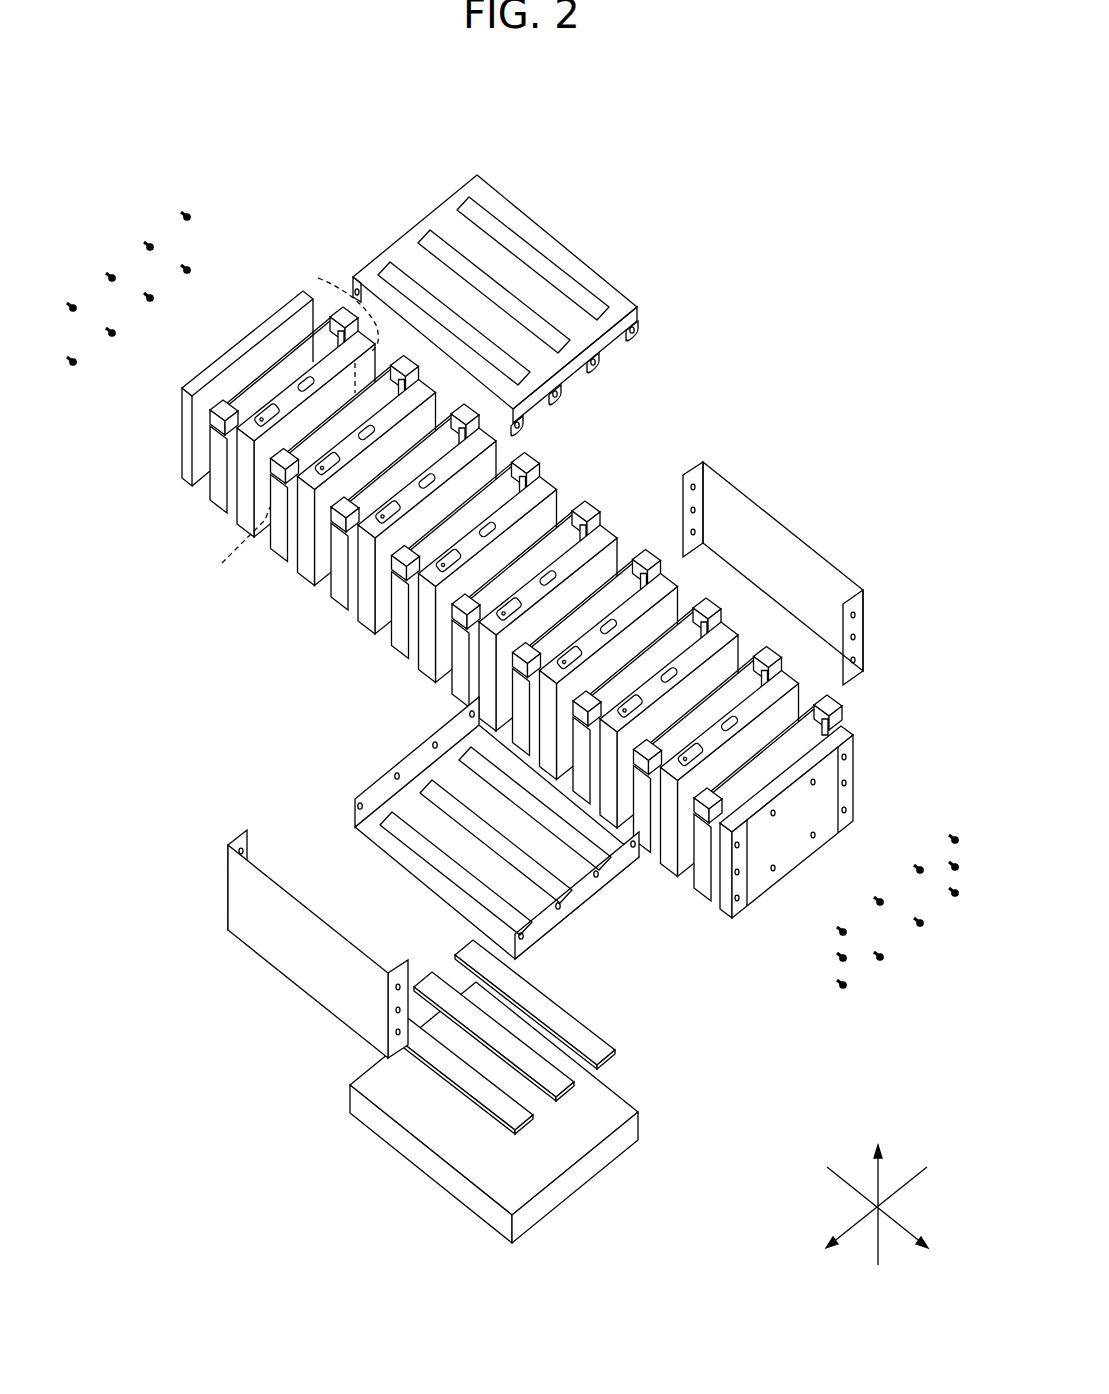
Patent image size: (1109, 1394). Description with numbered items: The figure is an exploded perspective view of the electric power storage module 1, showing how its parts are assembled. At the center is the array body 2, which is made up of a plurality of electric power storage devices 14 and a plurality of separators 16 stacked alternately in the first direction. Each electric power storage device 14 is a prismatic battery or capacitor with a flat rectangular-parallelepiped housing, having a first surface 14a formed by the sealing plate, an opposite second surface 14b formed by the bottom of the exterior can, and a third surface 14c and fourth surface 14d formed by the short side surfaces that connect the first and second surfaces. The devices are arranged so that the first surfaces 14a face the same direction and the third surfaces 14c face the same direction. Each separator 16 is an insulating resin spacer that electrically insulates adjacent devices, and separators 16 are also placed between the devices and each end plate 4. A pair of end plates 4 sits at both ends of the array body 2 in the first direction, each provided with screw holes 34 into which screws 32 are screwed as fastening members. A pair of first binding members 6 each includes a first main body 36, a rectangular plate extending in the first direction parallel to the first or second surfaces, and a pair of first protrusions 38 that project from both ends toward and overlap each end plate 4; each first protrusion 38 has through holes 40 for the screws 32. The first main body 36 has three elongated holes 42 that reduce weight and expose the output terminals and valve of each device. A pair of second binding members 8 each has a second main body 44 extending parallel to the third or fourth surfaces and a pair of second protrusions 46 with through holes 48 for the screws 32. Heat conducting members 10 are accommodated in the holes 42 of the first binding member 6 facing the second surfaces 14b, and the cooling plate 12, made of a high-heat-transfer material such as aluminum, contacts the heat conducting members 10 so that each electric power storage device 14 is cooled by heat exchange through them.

The electric power storage module 1 is at (522, 716).
The array body 2 is at (484, 576).
The end plate 4 is at (561, 587).
The first binding member 6 is at (534, 538).
The second binding member 8 is at (577, 733).
The heat conducting member 10 is at (602, 1038).
The cooling plate 12 is at (598, 1176).
The electric power storage device 14 is at (307, 573).
The first surface 14a is at (251, 425).
The second surface 14b is at (222, 544).
The third surface 14c is at (198, 490).
The fourth surface 14d is at (335, 322).
The separator 16 is at (273, 550).
The screw 32 is at (957, 898).
The screw hole 34 is at (816, 838).
The first main body 36 is at (558, 243).
The first protrusion 38 is at (354, 277).
The through hole 40 is at (598, 348).
The hole 42 is at (590, 297).
The second main body 44 is at (843, 567).
The second protrusion 46 is at (693, 462).
The through hole 48 is at (860, 637).